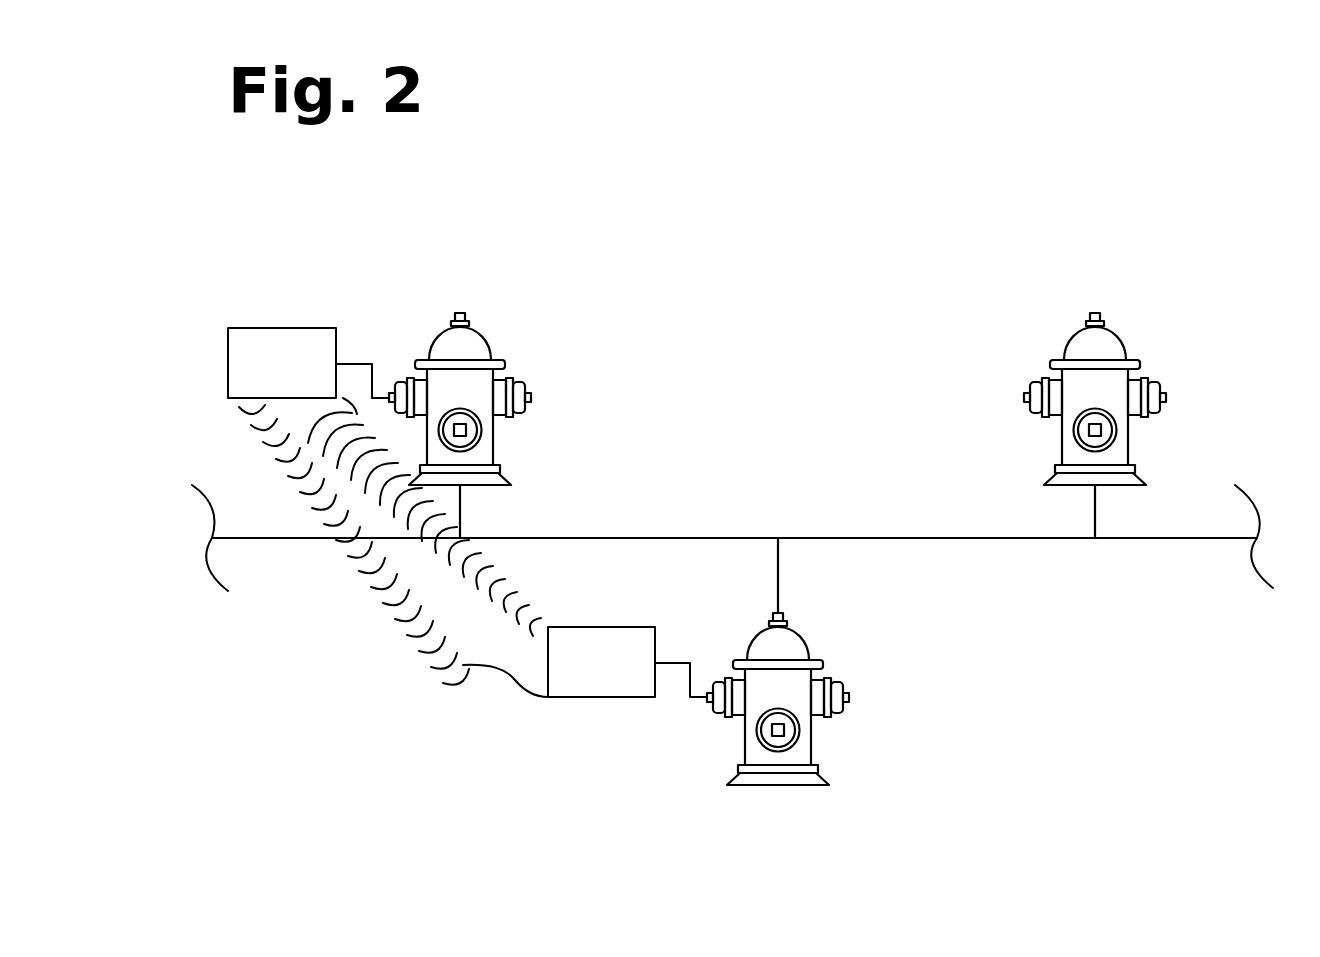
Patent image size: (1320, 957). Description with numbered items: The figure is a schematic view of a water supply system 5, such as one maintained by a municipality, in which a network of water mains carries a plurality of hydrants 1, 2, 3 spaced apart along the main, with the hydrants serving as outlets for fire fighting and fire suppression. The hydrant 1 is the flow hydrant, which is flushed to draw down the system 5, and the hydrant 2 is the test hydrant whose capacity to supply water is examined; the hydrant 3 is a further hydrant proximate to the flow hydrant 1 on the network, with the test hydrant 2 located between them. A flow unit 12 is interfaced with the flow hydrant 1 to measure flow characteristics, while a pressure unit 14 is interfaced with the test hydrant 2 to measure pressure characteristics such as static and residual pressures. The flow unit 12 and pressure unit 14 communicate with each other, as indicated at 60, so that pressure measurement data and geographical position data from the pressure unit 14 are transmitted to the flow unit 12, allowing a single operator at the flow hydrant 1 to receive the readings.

The flow hydrant 1 is at (470, 388).
The test hydrant 2 is at (787, 688).
The hydrant 3 is at (1082, 388).
The water supply system 5 is at (833, 263).
The flow unit 12 is at (303, 387).
The pressure unit 14 is at (623, 685).
The communication between flow and pressure units 60 is at (330, 604).